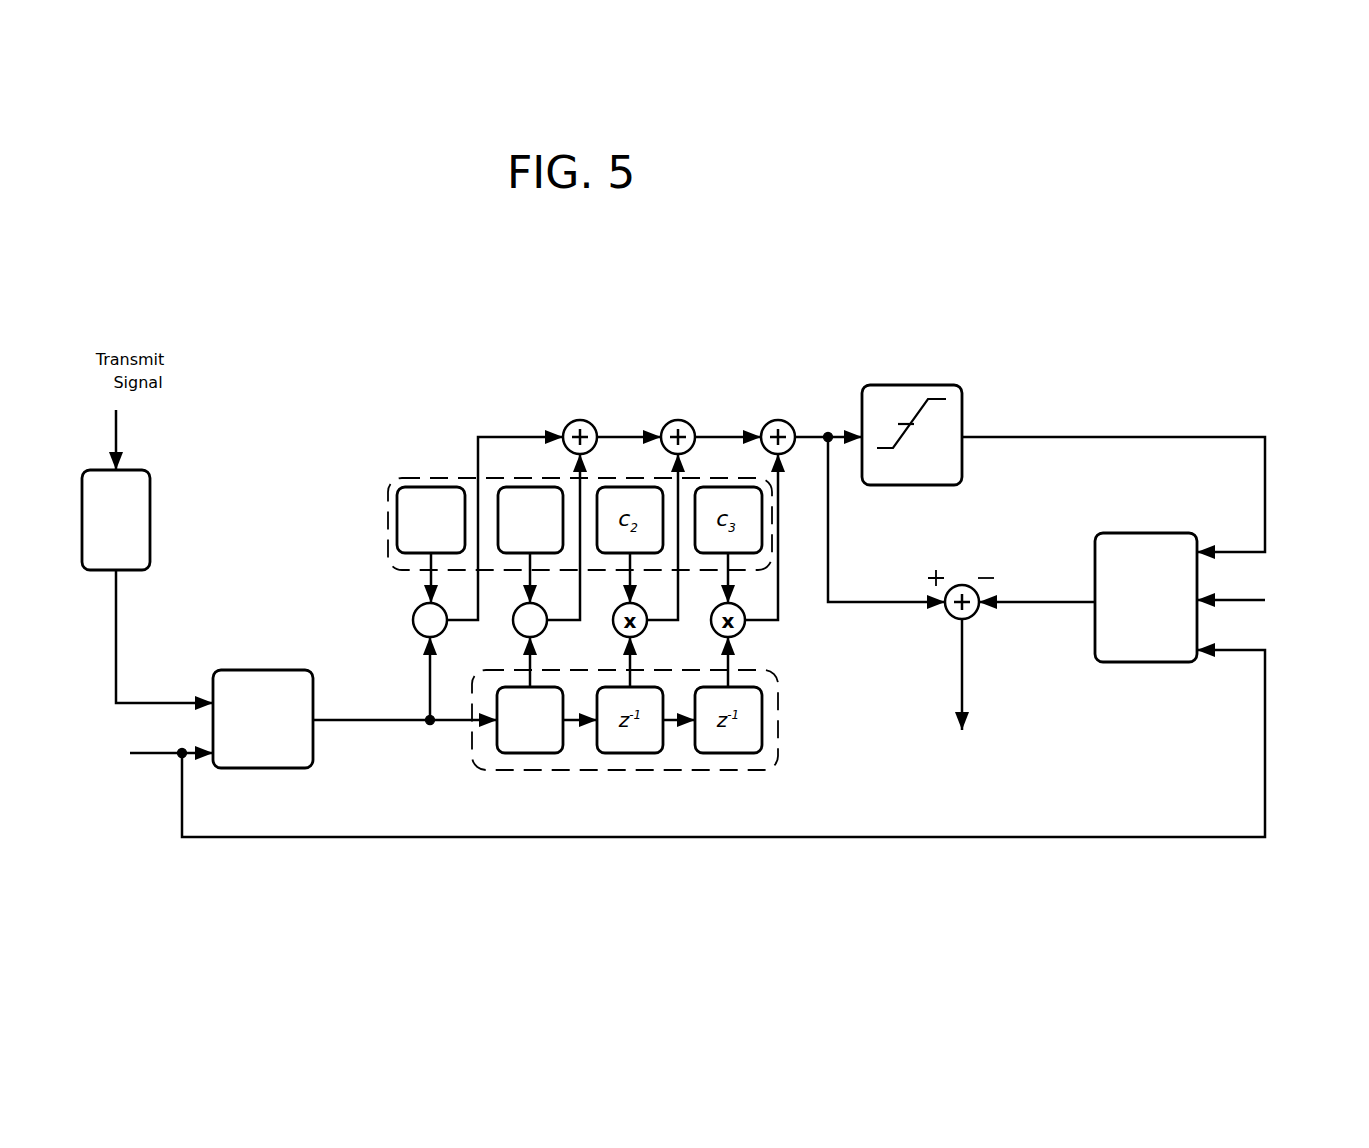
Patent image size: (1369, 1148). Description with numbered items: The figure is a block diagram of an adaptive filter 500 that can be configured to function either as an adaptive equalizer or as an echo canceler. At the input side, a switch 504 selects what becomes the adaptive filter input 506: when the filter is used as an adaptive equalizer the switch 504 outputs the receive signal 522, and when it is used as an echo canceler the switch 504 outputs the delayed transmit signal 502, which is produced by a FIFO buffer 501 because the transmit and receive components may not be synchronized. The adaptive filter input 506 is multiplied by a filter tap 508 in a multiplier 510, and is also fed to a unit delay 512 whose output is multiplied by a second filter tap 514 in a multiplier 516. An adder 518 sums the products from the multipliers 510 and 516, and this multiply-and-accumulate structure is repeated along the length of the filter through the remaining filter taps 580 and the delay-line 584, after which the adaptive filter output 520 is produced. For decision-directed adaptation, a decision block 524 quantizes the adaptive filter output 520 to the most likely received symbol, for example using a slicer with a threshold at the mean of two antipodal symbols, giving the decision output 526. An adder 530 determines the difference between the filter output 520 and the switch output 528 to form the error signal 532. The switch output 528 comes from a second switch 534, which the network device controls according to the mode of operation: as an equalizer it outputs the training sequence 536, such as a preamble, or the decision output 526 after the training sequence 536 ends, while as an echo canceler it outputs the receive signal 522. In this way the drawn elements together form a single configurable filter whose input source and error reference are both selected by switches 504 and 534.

The adaptive filter 500 is at (1046, 232).
The FIFO buffer 501 is at (150, 502).
The delayed transmit signal 502 is at (150, 703).
The switch 504 is at (252, 670).
The adaptive filter input 506 is at (366, 724).
The filter tap 508 is at (392, 516).
The multiplier 510 is at (412, 621).
The unit delay 512 is at (528, 755).
The filter tap 514 is at (528, 487).
The multiplier 516 is at (512, 624).
The adder 518 is at (580, 420).
The adaptive filter output 520 is at (814, 432).
The receive signal 522 is at (160, 758).
The decision block 524 is at (932, 385).
The decision output 526 is at (1012, 437).
The switch output 528 is at (1042, 602).
The adder 530 is at (966, 585).
The error signal 532 is at (965, 668).
The switch 534 is at (1148, 662).
The training sequence 536 is at (1258, 600).
The filter taps 580 is at (430, 479).
The delay-line 584 is at (472, 745).